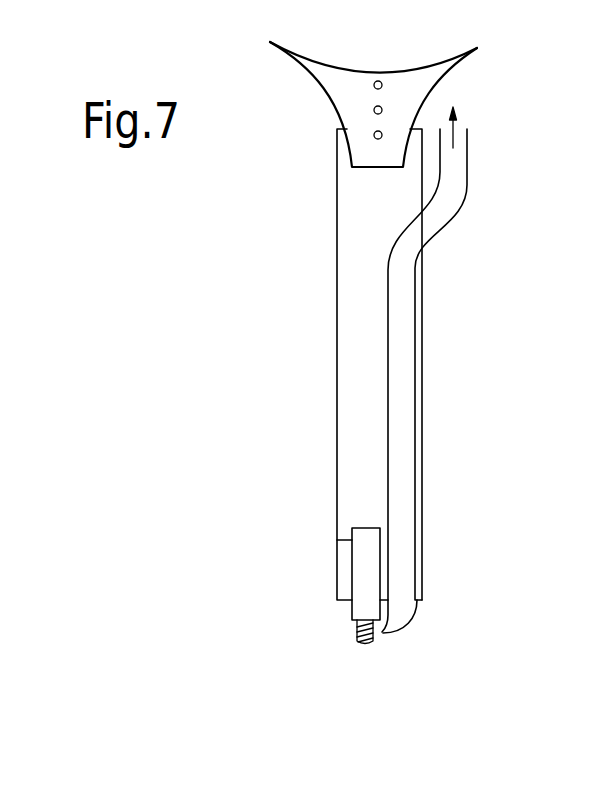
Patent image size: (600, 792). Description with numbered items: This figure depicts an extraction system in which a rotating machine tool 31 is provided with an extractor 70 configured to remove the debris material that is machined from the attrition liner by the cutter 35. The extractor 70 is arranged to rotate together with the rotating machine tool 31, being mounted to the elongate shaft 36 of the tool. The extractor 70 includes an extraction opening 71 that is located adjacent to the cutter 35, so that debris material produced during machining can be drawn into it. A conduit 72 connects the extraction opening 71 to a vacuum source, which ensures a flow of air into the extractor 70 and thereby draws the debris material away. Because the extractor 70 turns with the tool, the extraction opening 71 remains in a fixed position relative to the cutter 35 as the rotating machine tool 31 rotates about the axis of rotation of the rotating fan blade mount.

The rotating machine tool 31 is at (326, 341).
The cutter 35 is at (357, 632).
The elongate shaft 36 is at (343, 428).
The extractor 70 is at (402, 495).
The extraction opening 71 is at (381, 630).
The conduit 72 is at (403, 343).